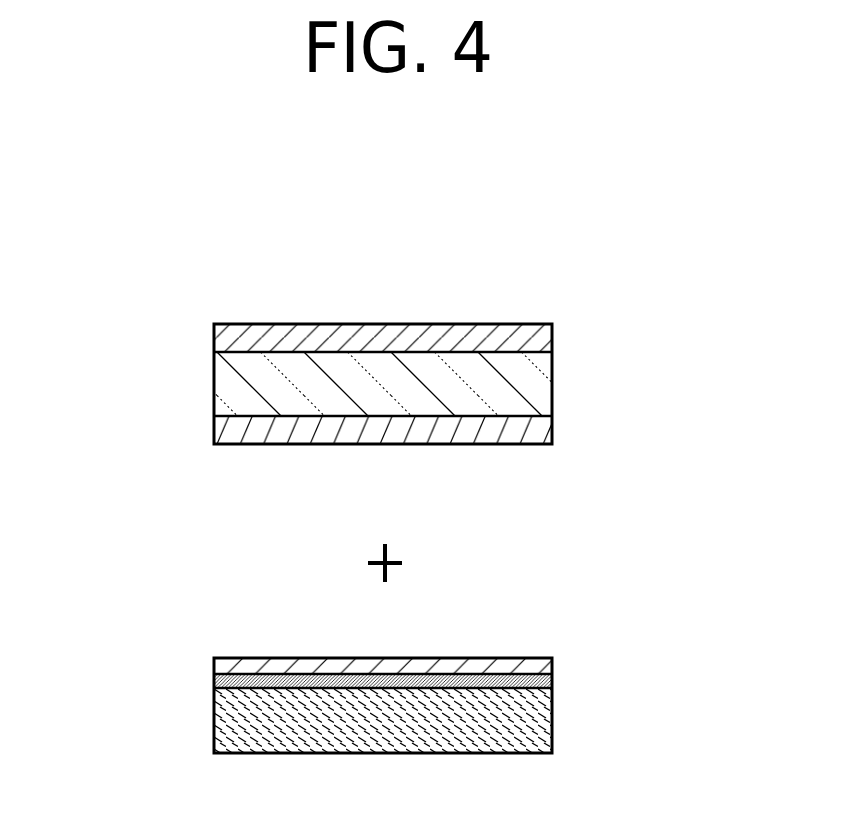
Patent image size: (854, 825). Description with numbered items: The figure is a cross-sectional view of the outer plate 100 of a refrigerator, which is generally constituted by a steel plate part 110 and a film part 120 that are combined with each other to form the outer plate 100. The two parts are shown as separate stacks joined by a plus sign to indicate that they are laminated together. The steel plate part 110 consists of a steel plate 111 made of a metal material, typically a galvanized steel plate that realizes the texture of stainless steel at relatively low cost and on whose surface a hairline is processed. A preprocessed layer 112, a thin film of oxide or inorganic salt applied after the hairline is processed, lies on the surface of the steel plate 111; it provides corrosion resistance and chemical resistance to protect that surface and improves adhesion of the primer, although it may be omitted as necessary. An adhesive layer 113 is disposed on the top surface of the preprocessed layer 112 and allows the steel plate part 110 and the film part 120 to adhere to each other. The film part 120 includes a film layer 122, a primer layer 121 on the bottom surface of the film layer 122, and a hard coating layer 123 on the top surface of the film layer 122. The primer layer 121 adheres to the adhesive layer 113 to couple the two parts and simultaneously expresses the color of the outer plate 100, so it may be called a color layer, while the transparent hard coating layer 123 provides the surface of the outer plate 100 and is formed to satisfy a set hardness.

The outer plate 100 is at (483, 286).
The film part 120 is at (570, 335).
The hard coating layer 123 is at (214, 338).
The film layer 122 is at (214, 385).
The primer layer 121 is at (214, 431).
The steel plate part 110 is at (570, 658).
The adhesive layer 113 is at (214, 665).
The preprocessed layer 112 is at (214, 682).
The steel plate 111 is at (214, 722).